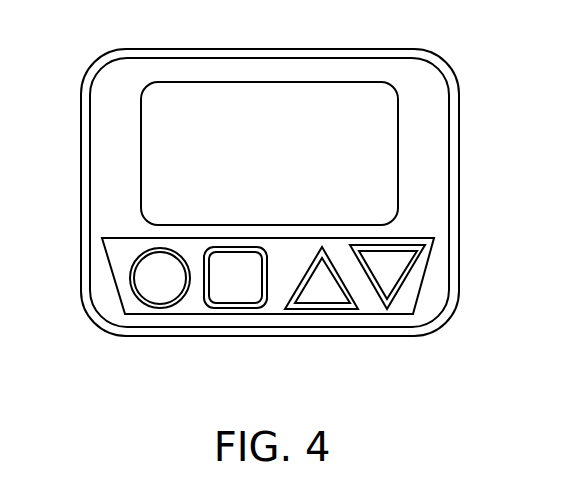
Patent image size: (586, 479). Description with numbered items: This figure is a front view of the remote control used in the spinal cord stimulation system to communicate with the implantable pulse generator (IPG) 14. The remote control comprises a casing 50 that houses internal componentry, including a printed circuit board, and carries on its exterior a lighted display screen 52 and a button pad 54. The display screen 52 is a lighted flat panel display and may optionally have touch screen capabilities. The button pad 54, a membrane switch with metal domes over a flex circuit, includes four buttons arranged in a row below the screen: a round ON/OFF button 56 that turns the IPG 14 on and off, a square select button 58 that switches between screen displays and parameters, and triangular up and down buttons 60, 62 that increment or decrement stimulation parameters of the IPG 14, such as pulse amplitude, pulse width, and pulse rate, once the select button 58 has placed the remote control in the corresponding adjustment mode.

The implantable pulse generator 14 is at (444, 62).
The casing 50 is at (433, 144).
The display screen 52 is at (285, 97).
The button pad 54 is at (121, 259).
The ON/OFF button 56 is at (160, 290).
The select button 58 is at (244, 290).
The up button 60 is at (330, 290).
The down button 62 is at (388, 278).